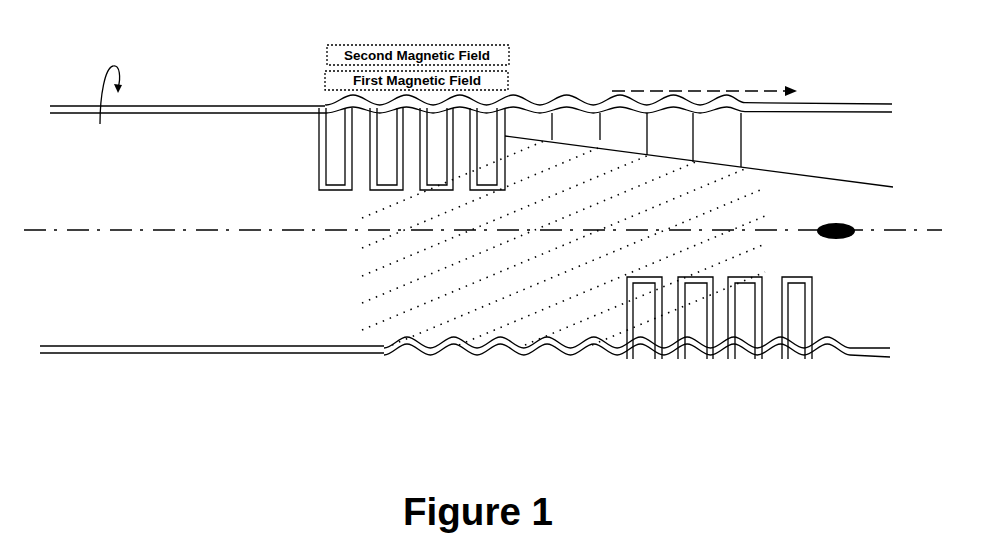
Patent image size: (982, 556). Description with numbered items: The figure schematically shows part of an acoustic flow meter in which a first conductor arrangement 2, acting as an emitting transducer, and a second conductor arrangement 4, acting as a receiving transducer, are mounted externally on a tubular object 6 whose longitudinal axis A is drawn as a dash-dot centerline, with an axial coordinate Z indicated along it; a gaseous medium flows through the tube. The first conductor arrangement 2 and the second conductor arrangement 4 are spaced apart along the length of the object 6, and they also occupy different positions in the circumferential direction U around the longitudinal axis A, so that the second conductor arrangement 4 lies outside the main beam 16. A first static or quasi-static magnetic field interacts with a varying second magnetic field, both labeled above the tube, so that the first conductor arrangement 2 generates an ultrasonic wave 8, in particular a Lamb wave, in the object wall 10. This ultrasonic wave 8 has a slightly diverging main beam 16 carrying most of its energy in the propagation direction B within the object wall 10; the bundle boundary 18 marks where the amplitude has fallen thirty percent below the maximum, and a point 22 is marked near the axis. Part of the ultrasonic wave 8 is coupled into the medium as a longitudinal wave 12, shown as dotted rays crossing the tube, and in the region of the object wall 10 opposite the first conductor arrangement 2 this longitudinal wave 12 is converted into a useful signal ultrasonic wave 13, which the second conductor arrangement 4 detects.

The first conductor arrangement 2 is at (310, 148).
The second conductor arrangement 4 is at (826, 309).
The tubular object 6 is at (168, 364).
The ultrasonic wave 8 is at (528, 106).
The object wall 10 is at (200, 107).
The longitudinal wave 12 is at (398, 264).
The useful signal ultrasonic wave 13 is at (582, 349).
The main beam 16 is at (582, 128).
The bundle boundary 18 is at (788, 175).
The measurement point 22 is at (822, 224).
The longitudinal axis A is at (33, 230).
The propagation direction B is at (743, 92).
The circumferential direction U is at (103, 83).
The axial coordinate Z is at (235, 262).